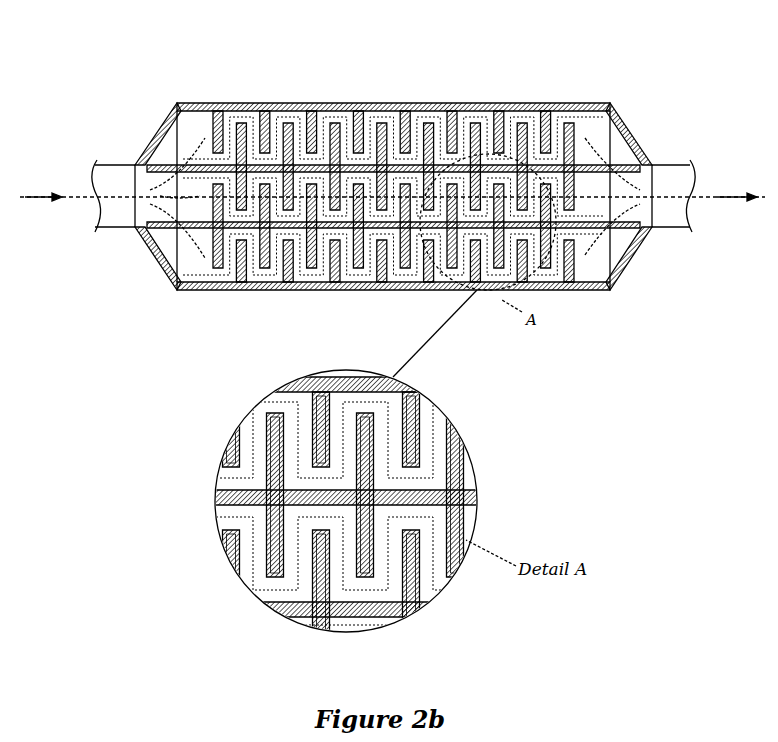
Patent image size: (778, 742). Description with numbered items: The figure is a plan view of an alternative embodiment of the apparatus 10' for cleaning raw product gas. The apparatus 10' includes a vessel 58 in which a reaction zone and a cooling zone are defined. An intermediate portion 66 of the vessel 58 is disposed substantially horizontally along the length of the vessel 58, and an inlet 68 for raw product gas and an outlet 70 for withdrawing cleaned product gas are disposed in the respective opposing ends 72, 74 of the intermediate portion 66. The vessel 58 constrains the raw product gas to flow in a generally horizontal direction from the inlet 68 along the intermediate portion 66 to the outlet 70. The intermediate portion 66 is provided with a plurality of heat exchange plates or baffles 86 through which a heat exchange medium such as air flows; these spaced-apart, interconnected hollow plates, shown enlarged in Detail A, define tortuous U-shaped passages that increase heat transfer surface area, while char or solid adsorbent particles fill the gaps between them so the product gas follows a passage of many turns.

The apparatus 10' is at (397, 345).
The vessel 58 is at (415, 166).
The intermediate portion 66 is at (474, 103).
The inlet 68 is at (97, 215).
The outlet 70 is at (690, 175).
The end 72 is at (138, 158).
The end 74 is at (650, 156).
The heat exchange plates or baffles 86 is at (374, 103).